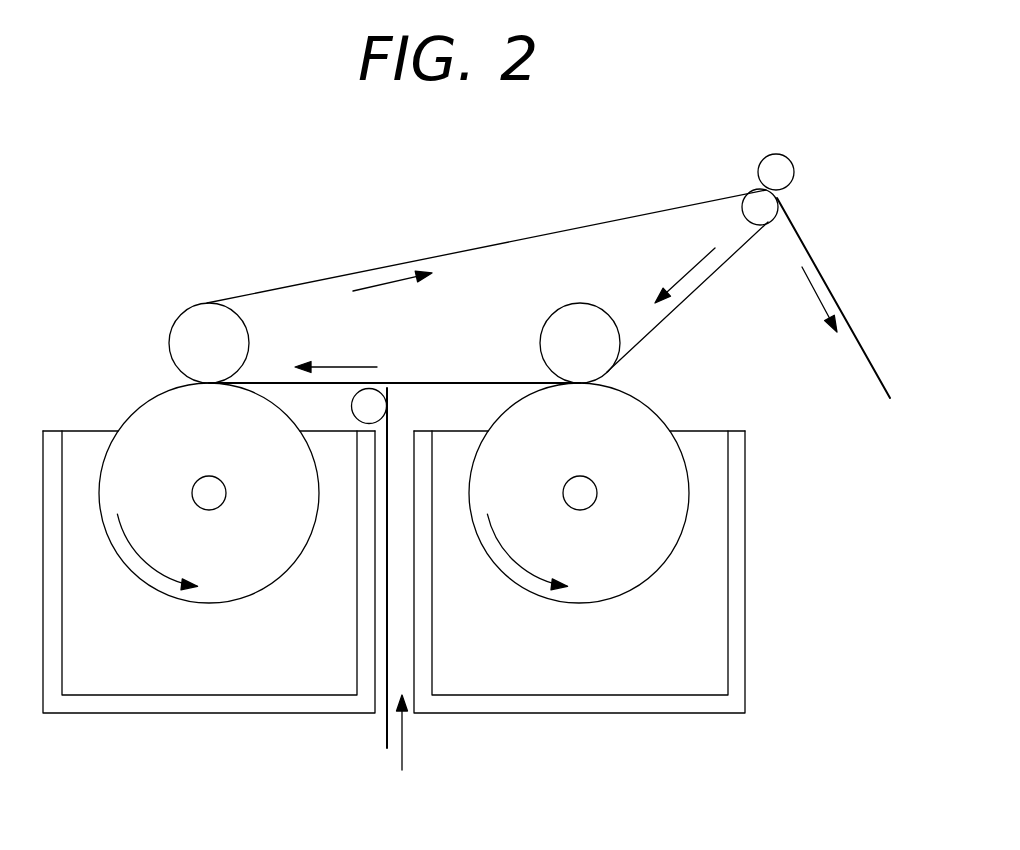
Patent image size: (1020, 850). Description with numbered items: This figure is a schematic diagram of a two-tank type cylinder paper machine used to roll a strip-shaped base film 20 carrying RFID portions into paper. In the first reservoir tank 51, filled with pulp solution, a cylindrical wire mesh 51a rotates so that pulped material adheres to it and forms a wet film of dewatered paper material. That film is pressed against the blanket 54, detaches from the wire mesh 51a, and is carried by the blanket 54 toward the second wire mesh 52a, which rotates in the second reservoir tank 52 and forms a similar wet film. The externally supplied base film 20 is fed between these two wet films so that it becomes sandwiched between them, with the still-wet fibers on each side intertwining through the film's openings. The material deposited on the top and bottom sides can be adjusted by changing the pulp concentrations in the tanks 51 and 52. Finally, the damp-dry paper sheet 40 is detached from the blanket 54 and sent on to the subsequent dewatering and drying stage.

The base film 20 is at (385, 730).
The paper sheet 40 is at (812, 257).
The first reservoir tank 51 is at (468, 705).
The wire mesh 51a is at (610, 563).
The second reservoir tank 52 is at (75, 705).
The second wire mesh 52a is at (217, 563).
The blanket 54 is at (712, 280).